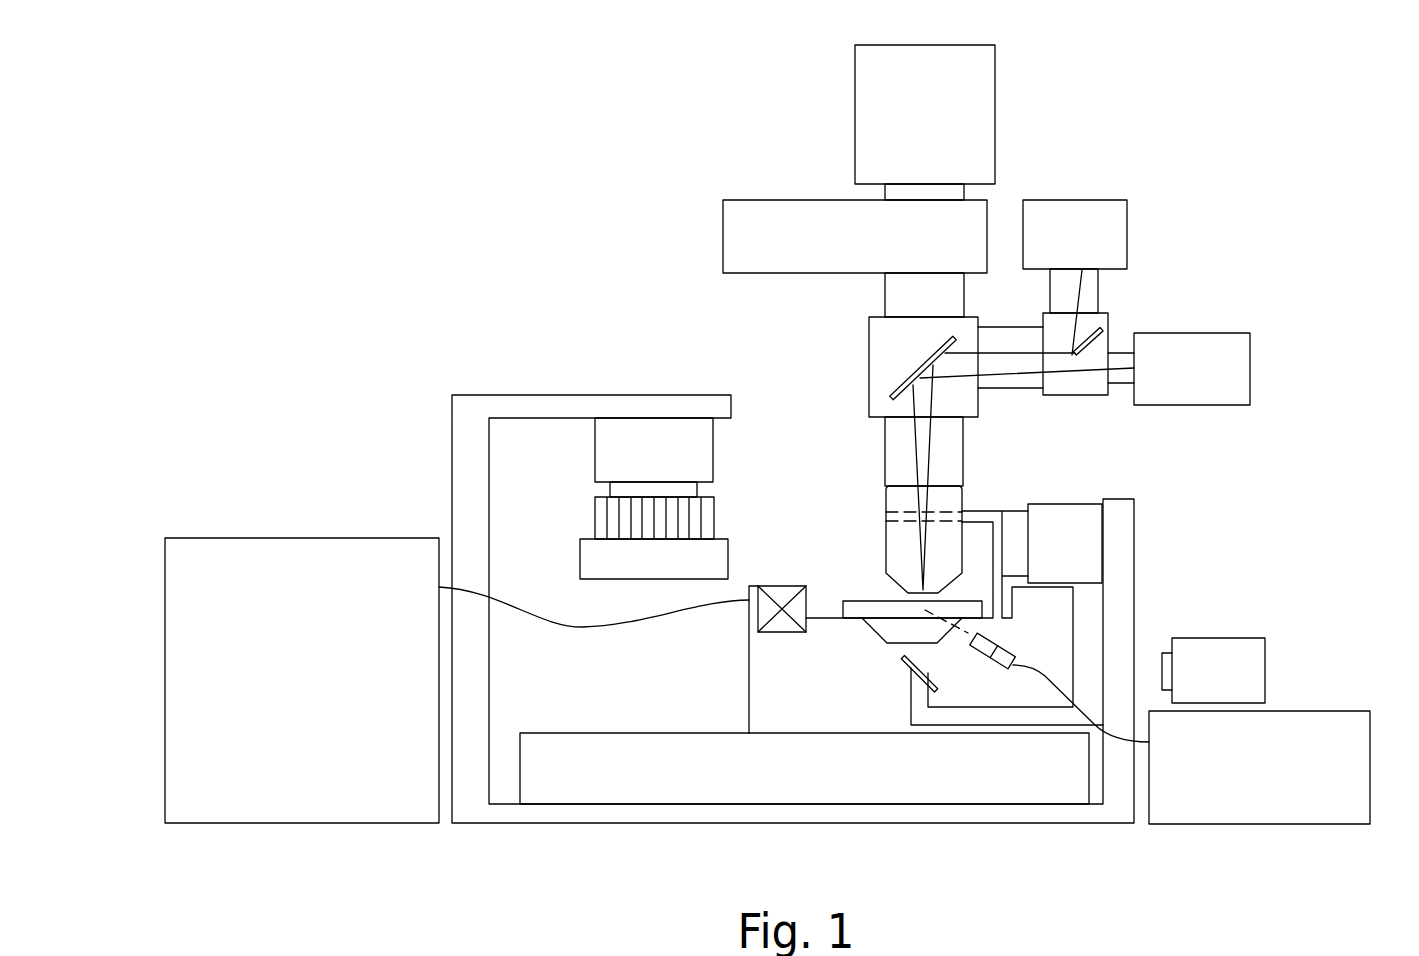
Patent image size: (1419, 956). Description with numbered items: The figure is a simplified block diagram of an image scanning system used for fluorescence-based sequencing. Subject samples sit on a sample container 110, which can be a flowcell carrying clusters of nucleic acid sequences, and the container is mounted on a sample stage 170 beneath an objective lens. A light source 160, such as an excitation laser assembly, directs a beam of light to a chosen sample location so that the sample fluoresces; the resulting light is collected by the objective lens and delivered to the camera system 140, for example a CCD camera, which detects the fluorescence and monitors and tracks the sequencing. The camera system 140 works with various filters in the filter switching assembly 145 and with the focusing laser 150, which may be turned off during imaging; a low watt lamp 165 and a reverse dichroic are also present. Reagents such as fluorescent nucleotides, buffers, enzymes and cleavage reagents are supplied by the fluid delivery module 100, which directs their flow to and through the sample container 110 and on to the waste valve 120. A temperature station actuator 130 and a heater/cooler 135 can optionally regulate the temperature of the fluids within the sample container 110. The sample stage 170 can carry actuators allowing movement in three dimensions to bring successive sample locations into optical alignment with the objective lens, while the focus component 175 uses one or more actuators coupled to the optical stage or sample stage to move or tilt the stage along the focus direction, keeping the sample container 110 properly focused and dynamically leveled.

The fluid delivery module 100 is at (282, 692).
The sample container 110 is at (903, 600).
The waste valve 120 is at (765, 587).
The temperature station actuator 130 is at (634, 464).
The heater/cooler 135 is at (634, 572).
The camera system 140 is at (904, 127).
The filter switching assembly 145 is at (834, 247).
The focusing laser 150 is at (1171, 382).
The light source 160 is at (1240, 781).
The low watt lamp 165 is at (1197, 686).
The sample stage 170 is at (784, 784).
The focus component 175 is at (1045, 559).